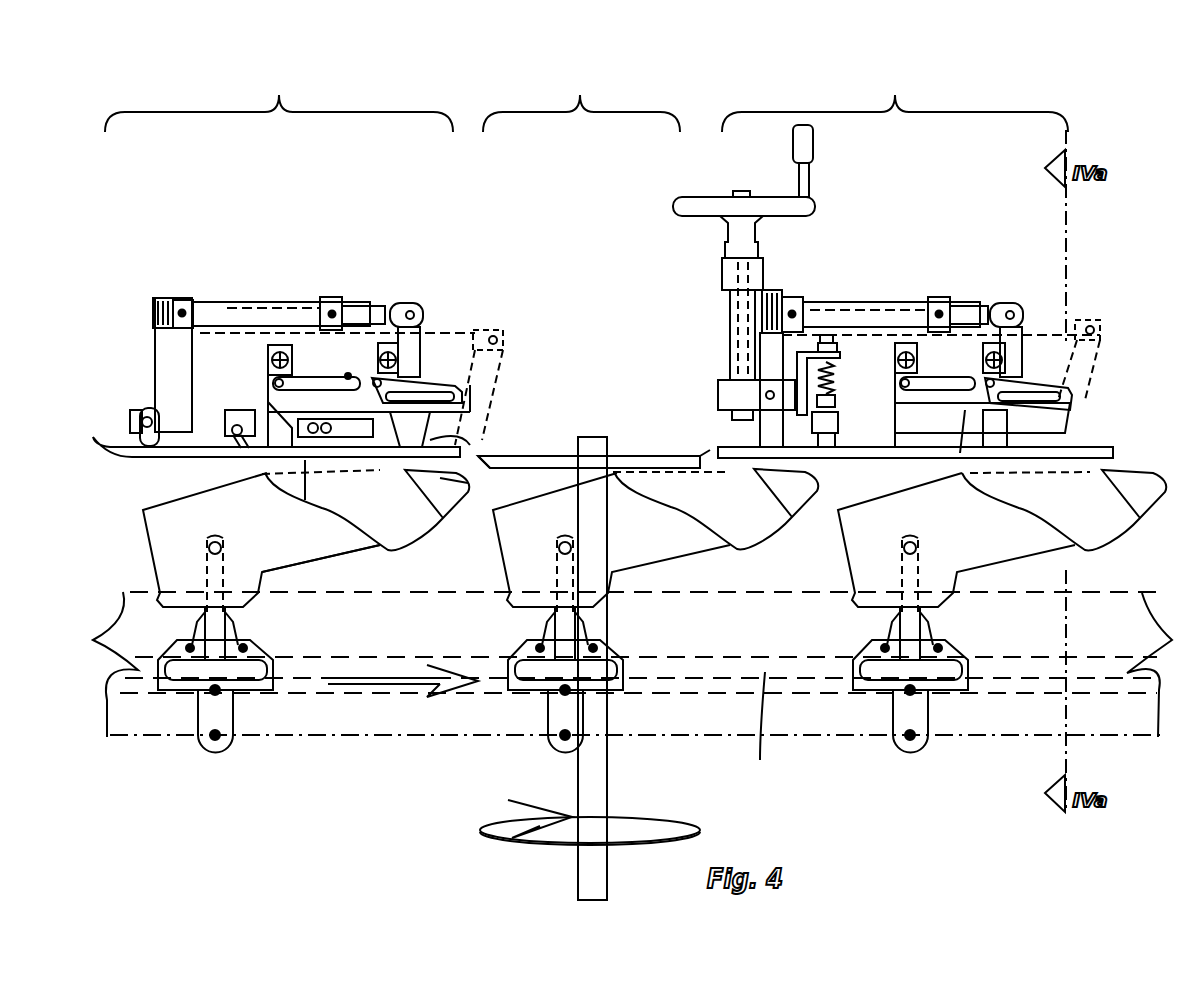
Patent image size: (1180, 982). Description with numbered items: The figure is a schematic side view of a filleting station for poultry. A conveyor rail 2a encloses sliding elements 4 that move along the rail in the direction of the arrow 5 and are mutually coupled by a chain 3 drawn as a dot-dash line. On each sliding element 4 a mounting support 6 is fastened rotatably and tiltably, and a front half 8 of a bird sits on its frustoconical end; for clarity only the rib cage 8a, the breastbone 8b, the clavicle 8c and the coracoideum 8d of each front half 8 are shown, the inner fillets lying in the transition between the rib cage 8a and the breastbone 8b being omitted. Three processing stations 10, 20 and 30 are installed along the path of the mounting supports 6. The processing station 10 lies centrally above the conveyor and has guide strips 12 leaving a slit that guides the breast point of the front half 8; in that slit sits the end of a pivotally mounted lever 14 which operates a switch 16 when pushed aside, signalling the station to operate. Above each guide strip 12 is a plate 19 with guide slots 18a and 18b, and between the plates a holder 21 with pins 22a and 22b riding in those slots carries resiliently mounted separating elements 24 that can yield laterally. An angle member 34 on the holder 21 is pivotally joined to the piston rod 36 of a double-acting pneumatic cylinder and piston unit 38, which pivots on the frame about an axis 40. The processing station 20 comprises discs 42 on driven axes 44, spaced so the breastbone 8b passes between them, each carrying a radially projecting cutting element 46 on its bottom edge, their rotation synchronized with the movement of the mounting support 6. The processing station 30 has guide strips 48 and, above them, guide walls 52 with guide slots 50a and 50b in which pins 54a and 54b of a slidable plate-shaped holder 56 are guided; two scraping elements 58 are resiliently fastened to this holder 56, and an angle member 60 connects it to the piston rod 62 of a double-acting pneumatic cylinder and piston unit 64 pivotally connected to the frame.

The conveyor rail 2a is at (760, 760).
The chain 3 is at (452, 738).
The sliding element 4 is at (173, 642).
The arrow 5 is at (395, 677).
The mounting support 6 is at (178, 556).
The front half of a bird 8 is at (421, 568).
The rib cage 8a is at (377, 503).
The breastbone 8b is at (300, 460).
The clavicle 8c is at (455, 445).
The coracoideum 8d is at (468, 483).
The processing station 10 is at (279, 104).
The guide strip 12 is at (148, 448).
The lever 14 is at (232, 440).
The switch 16 is at (254, 410).
The guide slot 18a is at (312, 375).
The guide slot 18b is at (460, 336).
The plate 19 is at (285, 378).
The processing station 20 is at (581, 104).
The holder 21 is at (336, 312).
The pin 22a is at (270, 372).
The pin 22b is at (370, 330).
The separating element 24 is at (305, 460).
The processing station 30 is at (895, 104).
The angle member 34 is at (418, 340).
The piston rod 36 is at (414, 312).
The cylinder and piston unit 38 is at (230, 305).
The axis 40 is at (187, 300).
The disc 42 is at (617, 455).
The axis 44 is at (605, 627).
The cutting element 46 is at (535, 452).
The guide strip 48 is at (760, 443).
The guide slot 50a is at (943, 378).
The guide slot 50b is at (1100, 331).
The guide wall 52 is at (1043, 405).
The pin 54a is at (906, 378).
The pin 54b is at (1008, 378).
The holder 56 is at (933, 405).
The scraping element 58 is at (960, 437).
The angle member 60 is at (1027, 343).
The piston rod 62 is at (986, 300).
The cylinder and piston unit 64 is at (832, 305).